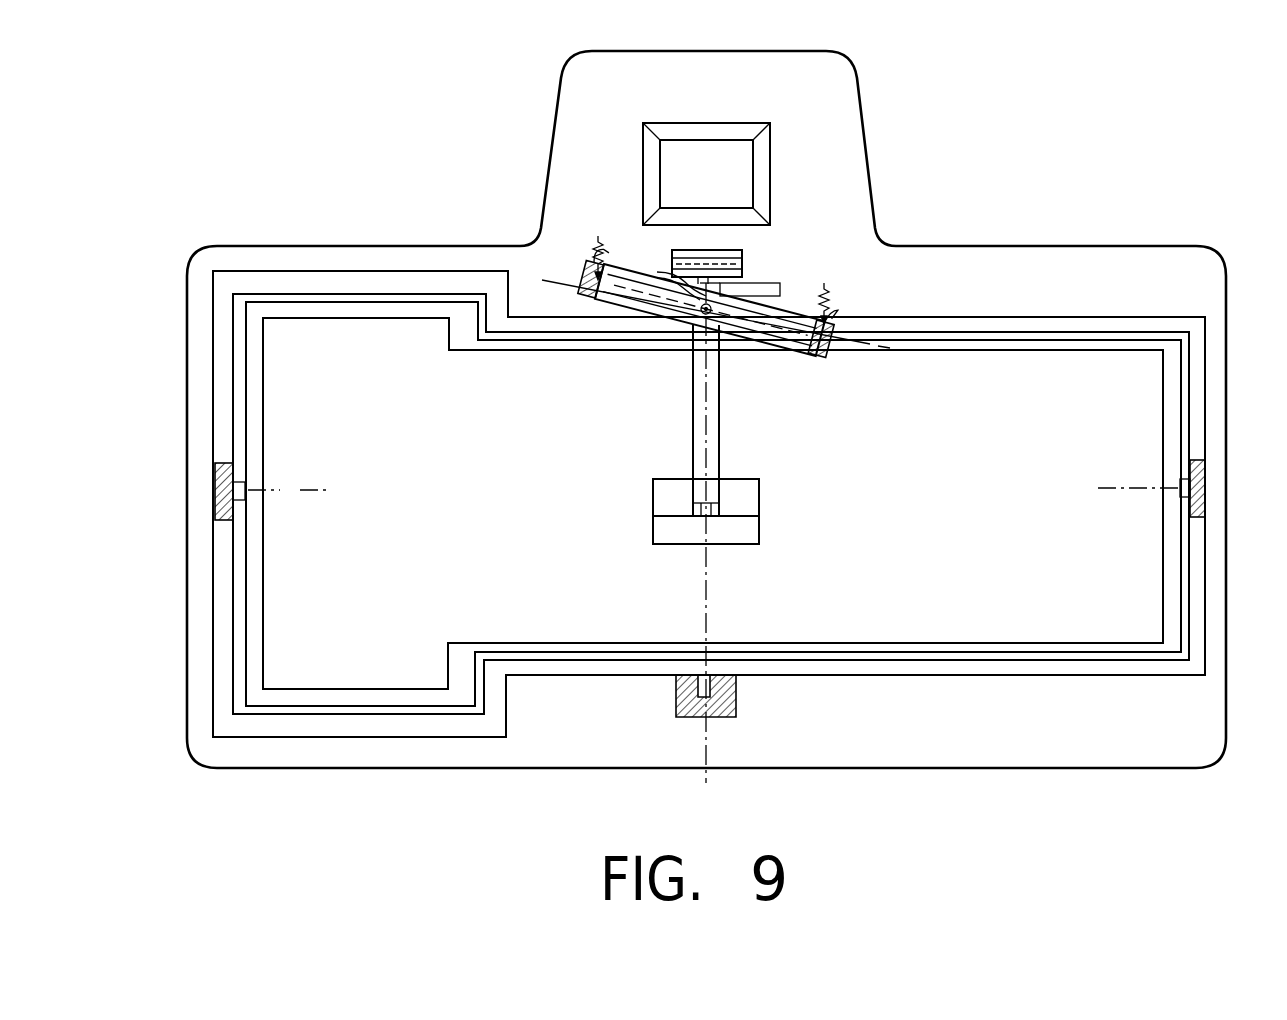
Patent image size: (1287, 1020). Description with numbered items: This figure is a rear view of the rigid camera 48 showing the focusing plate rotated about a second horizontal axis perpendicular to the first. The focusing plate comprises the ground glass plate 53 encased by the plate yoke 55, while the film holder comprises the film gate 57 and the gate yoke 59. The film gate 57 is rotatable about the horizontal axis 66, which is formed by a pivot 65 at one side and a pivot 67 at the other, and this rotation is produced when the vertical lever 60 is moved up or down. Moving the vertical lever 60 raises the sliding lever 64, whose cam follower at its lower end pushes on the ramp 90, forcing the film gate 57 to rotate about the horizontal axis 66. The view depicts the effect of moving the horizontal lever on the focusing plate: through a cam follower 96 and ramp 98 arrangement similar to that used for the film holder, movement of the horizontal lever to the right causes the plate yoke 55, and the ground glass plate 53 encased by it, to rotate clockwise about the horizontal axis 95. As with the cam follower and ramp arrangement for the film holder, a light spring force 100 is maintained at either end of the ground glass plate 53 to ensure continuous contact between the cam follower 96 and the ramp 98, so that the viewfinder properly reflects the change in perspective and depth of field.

The rigid camera 48 is at (1020, 146).
The ground glass plate 53 is at (838, 350).
The plate yoke 55 is at (600, 310).
The film gate 57 is at (535, 648).
The gate yoke 59 is at (577, 667).
The vertical lever 60 is at (745, 266).
The sliding lever 64 is at (694, 454).
The pivot 65 is at (216, 488).
The horizontal axis 66 is at (300, 490).
The pivot 67 is at (1208, 487).
The ramp 90 is at (753, 532).
The horizontal axis 95 is at (697, 333).
The cam follower 96 is at (728, 332).
The ramp 98 is at (657, 280).
The light spring force 100 is at (714, 265).